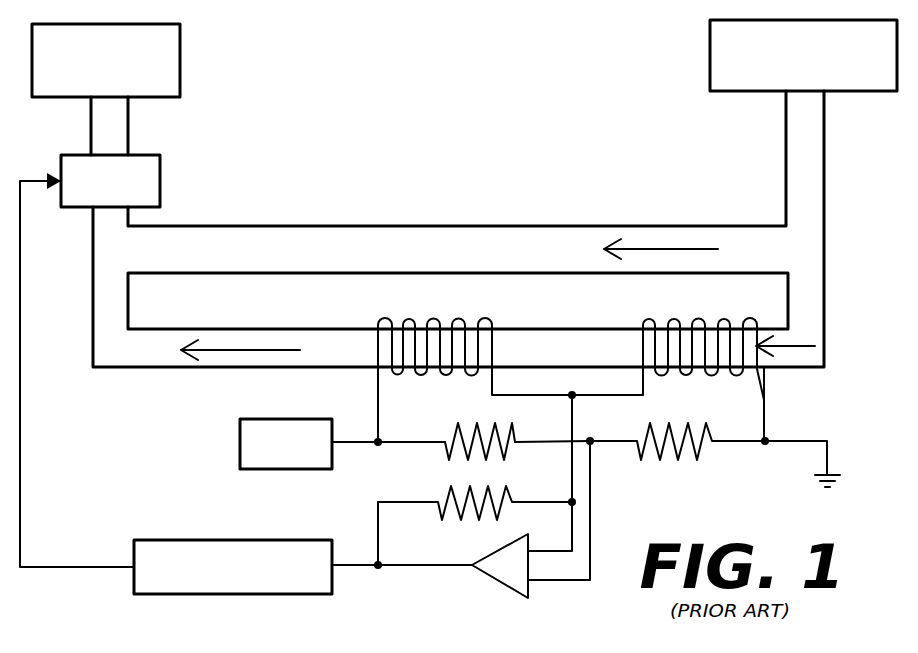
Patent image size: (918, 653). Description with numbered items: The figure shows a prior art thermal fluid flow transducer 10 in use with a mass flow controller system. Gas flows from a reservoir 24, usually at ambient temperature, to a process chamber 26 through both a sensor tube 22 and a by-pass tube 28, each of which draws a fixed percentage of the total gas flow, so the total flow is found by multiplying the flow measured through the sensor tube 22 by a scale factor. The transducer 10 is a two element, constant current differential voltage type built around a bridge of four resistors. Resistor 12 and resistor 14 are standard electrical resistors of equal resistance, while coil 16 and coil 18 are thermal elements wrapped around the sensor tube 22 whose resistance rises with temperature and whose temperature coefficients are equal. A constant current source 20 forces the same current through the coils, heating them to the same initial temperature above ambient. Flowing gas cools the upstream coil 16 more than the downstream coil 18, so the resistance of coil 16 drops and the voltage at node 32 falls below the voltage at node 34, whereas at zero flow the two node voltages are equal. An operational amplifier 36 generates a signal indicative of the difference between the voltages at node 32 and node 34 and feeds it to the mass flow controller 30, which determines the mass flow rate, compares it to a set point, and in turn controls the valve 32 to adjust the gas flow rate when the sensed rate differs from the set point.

The thermal fluid flow transducer 10 is at (497, 128).
The resistor 12 is at (446, 452).
The resistor 14 is at (706, 447).
The coil 16 is at (738, 376).
The coil 18 is at (440, 378).
The constant current source 20 is at (275, 454).
The sensor tube 22 is at (541, 356).
The reservoir 24 is at (791, 81).
The process chamber 26 is at (118, 87).
The by-pass tube 28 is at (427, 254).
The mass flow controller 30 is at (221, 591).
The node 32 is at (98, 193).
The node 34 is at (594, 445).
The operational amplifier 36 is at (499, 577).